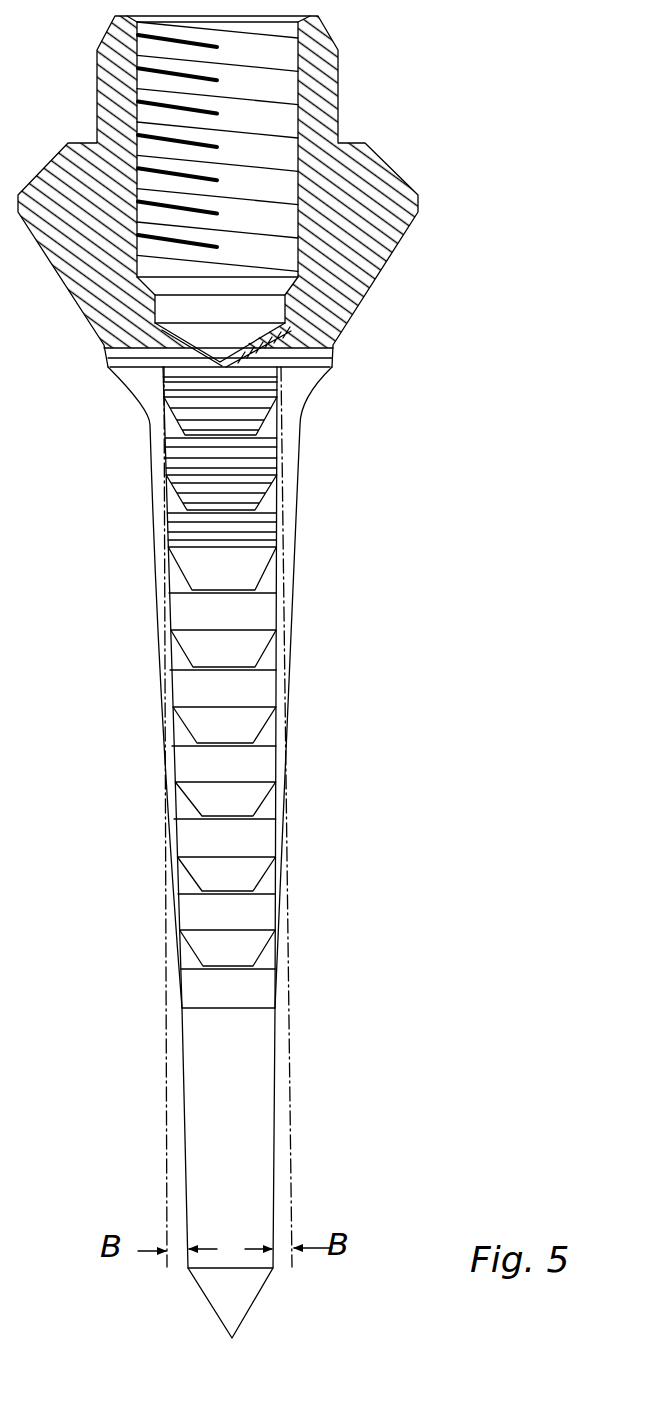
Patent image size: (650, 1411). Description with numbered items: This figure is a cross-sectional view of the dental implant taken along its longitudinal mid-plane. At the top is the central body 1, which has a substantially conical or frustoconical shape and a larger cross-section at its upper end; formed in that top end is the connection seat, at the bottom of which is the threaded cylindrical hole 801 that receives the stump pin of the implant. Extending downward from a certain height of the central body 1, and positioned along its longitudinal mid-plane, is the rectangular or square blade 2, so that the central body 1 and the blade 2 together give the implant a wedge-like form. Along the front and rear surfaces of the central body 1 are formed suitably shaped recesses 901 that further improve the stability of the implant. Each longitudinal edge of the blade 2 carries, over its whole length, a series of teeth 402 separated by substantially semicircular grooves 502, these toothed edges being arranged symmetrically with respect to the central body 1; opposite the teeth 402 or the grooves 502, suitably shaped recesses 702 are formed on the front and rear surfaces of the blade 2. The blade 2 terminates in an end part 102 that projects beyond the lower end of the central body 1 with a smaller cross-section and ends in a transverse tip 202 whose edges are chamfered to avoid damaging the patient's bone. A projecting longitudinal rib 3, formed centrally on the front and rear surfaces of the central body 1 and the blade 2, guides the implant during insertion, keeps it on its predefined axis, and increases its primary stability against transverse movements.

The central body 1 is at (218, 677).
The blade 2 is at (279, 978).
The projecting longitudinal rib 3 is at (152, 517).
The end part 102 is at (253, 1140).
The transverse tip 202 is at (253, 1295).
The teeth 402 is at (242, 648).
The grooves 502 is at (258, 685).
The recesses 702 is at (177, 578).
The threaded cylindrical hole 801 is at (288, 128).
The recesses 901 is at (177, 423).